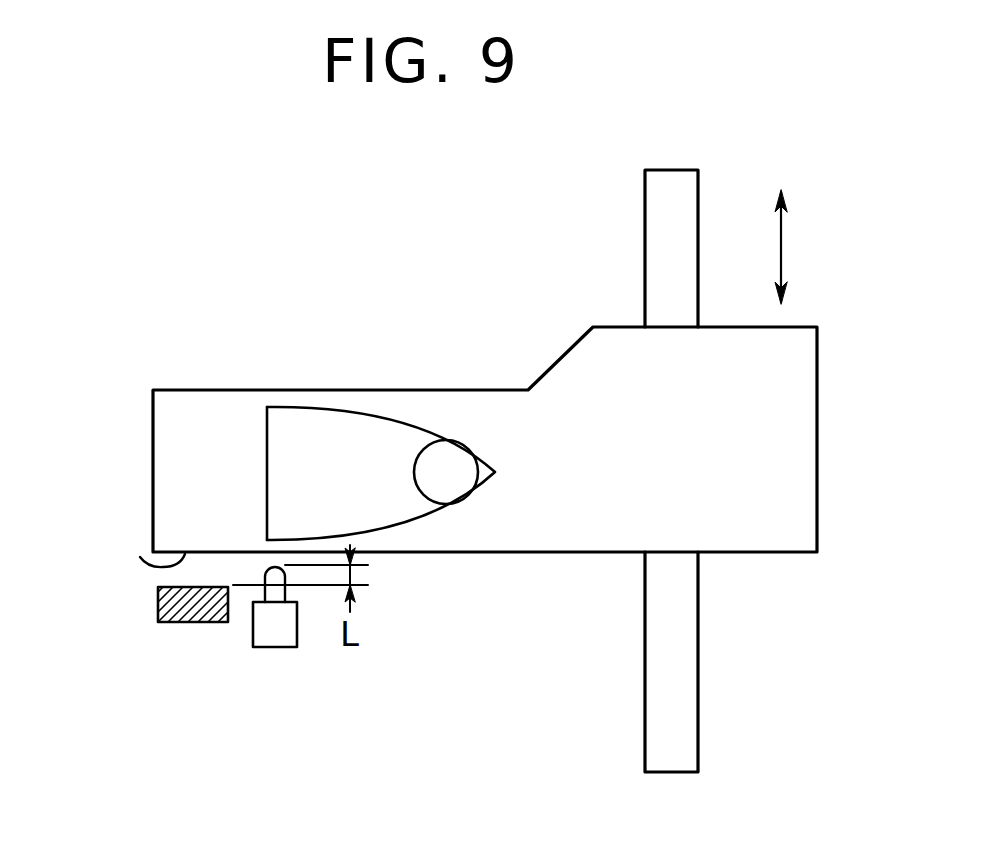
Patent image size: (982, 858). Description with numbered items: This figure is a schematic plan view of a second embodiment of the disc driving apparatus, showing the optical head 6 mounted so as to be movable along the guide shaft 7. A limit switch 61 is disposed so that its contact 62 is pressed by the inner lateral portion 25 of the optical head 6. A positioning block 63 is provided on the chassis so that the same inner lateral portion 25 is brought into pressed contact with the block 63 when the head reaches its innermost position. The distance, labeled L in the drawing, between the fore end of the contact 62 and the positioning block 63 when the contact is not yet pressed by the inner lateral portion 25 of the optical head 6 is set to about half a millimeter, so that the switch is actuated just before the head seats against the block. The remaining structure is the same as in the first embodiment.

The optical head 6 is at (793, 402).
The guide shaft 7 is at (688, 702).
The inner lateral portion 25 is at (140, 557).
The limit switch 61 is at (280, 628).
The contact 62 is at (275, 578).
The positioning block 63 is at (158, 602).